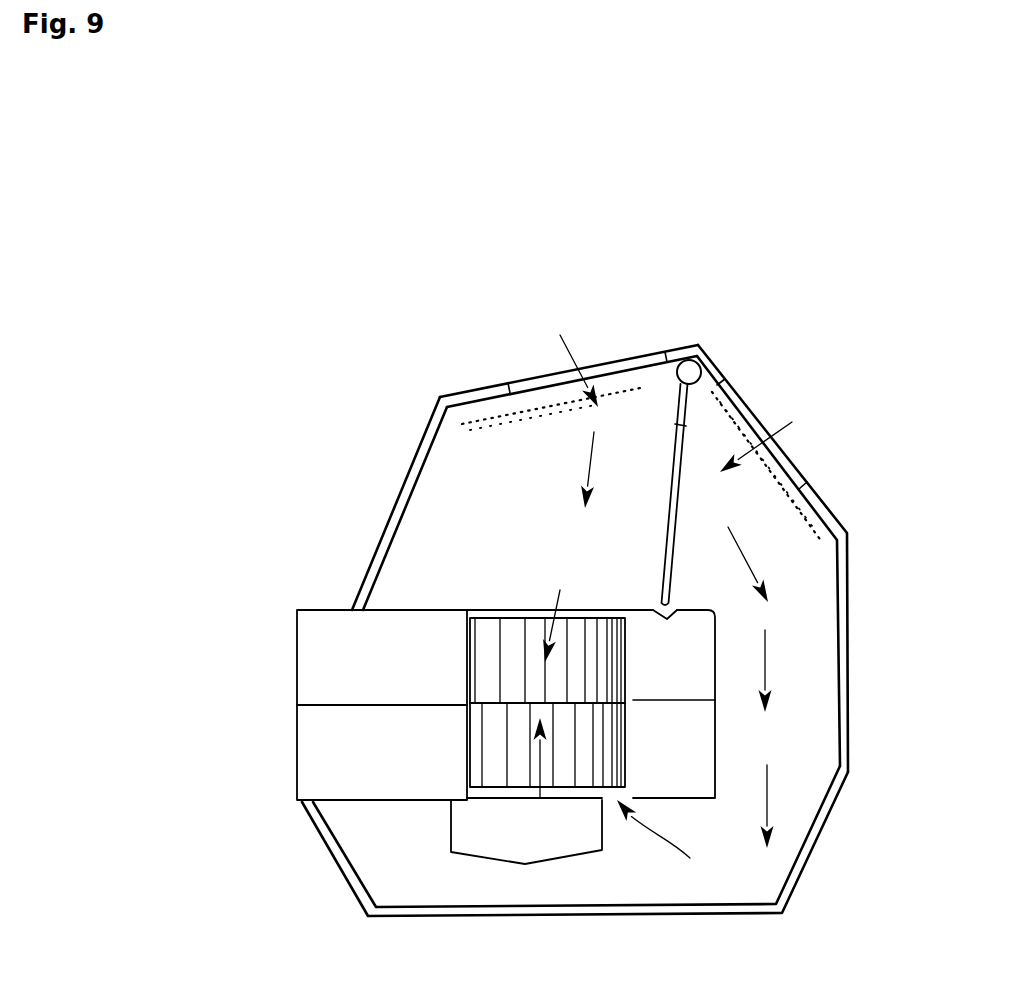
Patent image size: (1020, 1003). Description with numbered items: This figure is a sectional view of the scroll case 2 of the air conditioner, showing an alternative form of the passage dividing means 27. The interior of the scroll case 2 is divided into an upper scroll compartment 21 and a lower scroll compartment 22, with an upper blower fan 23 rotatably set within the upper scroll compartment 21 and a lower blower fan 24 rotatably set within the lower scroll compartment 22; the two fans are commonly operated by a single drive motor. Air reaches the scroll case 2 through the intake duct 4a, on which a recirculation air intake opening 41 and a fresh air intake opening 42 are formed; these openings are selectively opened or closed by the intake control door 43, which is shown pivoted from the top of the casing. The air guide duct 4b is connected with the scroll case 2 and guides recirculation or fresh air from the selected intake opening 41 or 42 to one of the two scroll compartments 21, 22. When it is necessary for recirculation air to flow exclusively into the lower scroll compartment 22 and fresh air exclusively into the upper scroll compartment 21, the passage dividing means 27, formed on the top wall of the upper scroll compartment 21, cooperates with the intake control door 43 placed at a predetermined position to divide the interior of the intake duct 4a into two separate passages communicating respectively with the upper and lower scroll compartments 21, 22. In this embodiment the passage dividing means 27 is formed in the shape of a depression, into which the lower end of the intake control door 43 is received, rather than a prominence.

The scroll case 2 is at (404, 824).
The intake duct 4a is at (418, 393).
The air guide duct 4b is at (819, 883).
The upper scroll compartment 21 is at (406, 617).
The lower scroll compartment 22 is at (348, 795).
The upper blower fan 23 is at (484, 665).
The lower blower fan 24 is at (487, 753).
The passage dividing means 27 is at (660, 604).
The recirculation air intake opening 41 is at (746, 411).
The fresh air intake opening 42 is at (641, 349).
The intake control door 43 is at (683, 425).